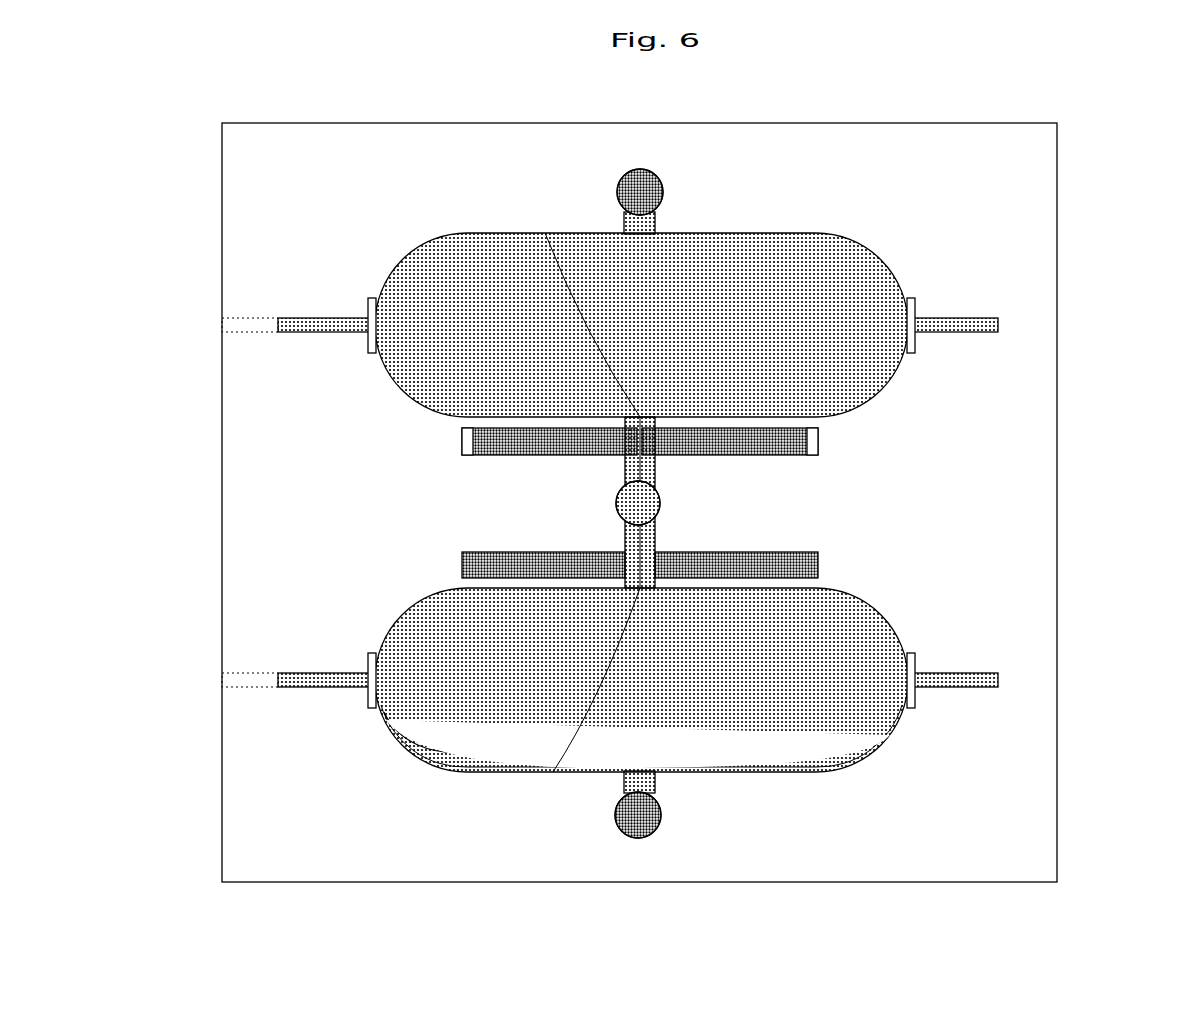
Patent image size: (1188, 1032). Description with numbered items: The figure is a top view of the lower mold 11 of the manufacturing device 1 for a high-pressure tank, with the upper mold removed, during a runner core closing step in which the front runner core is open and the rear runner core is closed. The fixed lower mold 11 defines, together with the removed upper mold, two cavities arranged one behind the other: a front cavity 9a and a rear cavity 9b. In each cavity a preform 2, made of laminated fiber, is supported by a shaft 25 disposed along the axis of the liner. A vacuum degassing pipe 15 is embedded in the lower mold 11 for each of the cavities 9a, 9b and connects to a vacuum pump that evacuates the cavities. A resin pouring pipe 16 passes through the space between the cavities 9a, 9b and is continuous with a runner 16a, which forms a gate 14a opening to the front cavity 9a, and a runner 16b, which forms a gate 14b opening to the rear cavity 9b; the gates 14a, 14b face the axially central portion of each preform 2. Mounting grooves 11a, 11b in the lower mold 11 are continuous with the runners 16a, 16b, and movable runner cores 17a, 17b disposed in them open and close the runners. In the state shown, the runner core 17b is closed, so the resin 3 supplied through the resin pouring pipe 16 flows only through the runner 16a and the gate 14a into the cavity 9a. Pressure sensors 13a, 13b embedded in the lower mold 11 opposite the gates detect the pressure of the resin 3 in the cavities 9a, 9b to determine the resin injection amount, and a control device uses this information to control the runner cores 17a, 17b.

The manufacturing device 1 is at (699, 485).
The preform 2 is at (641, 503).
The resin 3 is at (640, 501).
The cavity 9a is at (788, 764).
The cavity 9b is at (804, 242).
The lower mold 11 is at (1030, 826).
The mounting groove 11a is at (640, 562).
The mounting groove 11b is at (640, 442).
The pressure sensor 13a is at (630, 838).
The pressure sensor 13b is at (626, 177).
The gate 14a is at (552, 774).
The gate 14b is at (546, 233).
The vacuum degassing pipe 15 is at (222, 323).
The resin pouring pipe 16 is at (661, 497).
The runner 16a is at (655, 540).
The runner 16b is at (626, 478).
The runner core 17a is at (503, 557).
The runner core 17b is at (500, 446).
The shaft 25 is at (968, 332).